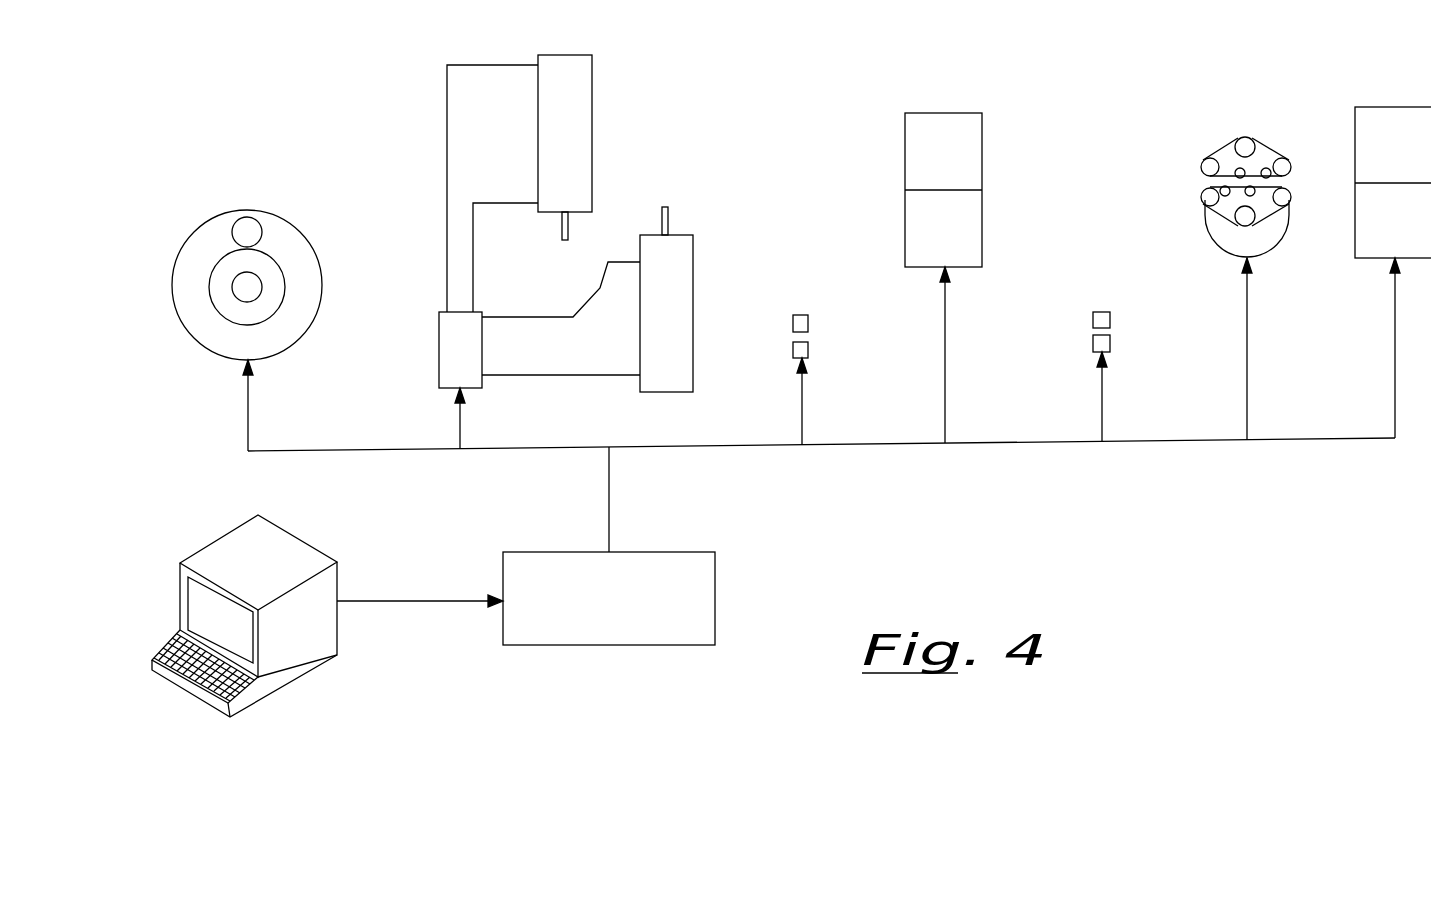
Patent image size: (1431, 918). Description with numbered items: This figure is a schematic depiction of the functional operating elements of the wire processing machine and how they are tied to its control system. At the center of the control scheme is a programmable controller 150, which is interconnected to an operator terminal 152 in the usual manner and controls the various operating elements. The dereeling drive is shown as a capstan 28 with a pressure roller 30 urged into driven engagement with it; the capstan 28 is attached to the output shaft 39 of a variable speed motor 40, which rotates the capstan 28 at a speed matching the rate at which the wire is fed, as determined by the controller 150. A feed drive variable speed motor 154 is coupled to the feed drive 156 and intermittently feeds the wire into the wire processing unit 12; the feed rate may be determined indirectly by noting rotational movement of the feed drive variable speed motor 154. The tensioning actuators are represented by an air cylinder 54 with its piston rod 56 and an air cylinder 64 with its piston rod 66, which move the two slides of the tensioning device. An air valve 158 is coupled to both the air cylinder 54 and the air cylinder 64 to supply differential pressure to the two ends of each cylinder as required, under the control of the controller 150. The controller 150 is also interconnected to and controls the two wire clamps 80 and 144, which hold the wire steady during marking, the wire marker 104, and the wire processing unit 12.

The wire processing unit 12 is at (1380, 98).
The capstan 28 is at (283, 278).
The pressure roller 30 is at (247, 227).
The output shaft 39 is at (243, 287).
The variable speed motor 40 is at (202, 343).
The air cylinder 54 is at (685, 317).
The piston rod 56 is at (665, 215).
The air cylinder 64 is at (583, 102).
The piston rod 66 is at (565, 242).
The wire clamp 80 is at (808, 350).
The wire marker 104 is at (945, 113).
The wire clamp 144 is at (1110, 320).
The programmable controller 150 is at (550, 550).
The operator terminal 152 is at (238, 528).
The feed drive variable speed motor 154 is at (1205, 230).
The feed drive 156 is at (1222, 143).
The air valve 158 is at (439, 355).